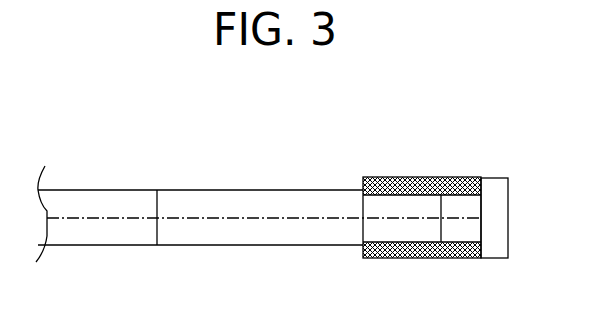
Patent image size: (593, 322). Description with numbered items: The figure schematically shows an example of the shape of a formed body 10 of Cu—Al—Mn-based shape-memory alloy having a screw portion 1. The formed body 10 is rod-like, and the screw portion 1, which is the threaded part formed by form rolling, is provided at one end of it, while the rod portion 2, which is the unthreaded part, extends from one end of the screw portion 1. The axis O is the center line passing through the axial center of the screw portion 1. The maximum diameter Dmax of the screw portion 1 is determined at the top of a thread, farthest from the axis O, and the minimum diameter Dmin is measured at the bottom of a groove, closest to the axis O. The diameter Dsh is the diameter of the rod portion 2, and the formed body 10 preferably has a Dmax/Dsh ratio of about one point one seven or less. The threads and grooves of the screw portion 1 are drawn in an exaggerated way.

The formed body 10 is at (298, 211).
The rod portion 2 is at (362, 257).
The screw portion 1 is at (481, 262).
The diameter of the rod portion Dsh is at (158, 210).
The minimum diameter of the screw portion Dmin is at (442, 206).
The maximum diameter of the screw portion Dmax is at (509, 225).
The axis of the screw portion O is at (310, 213).